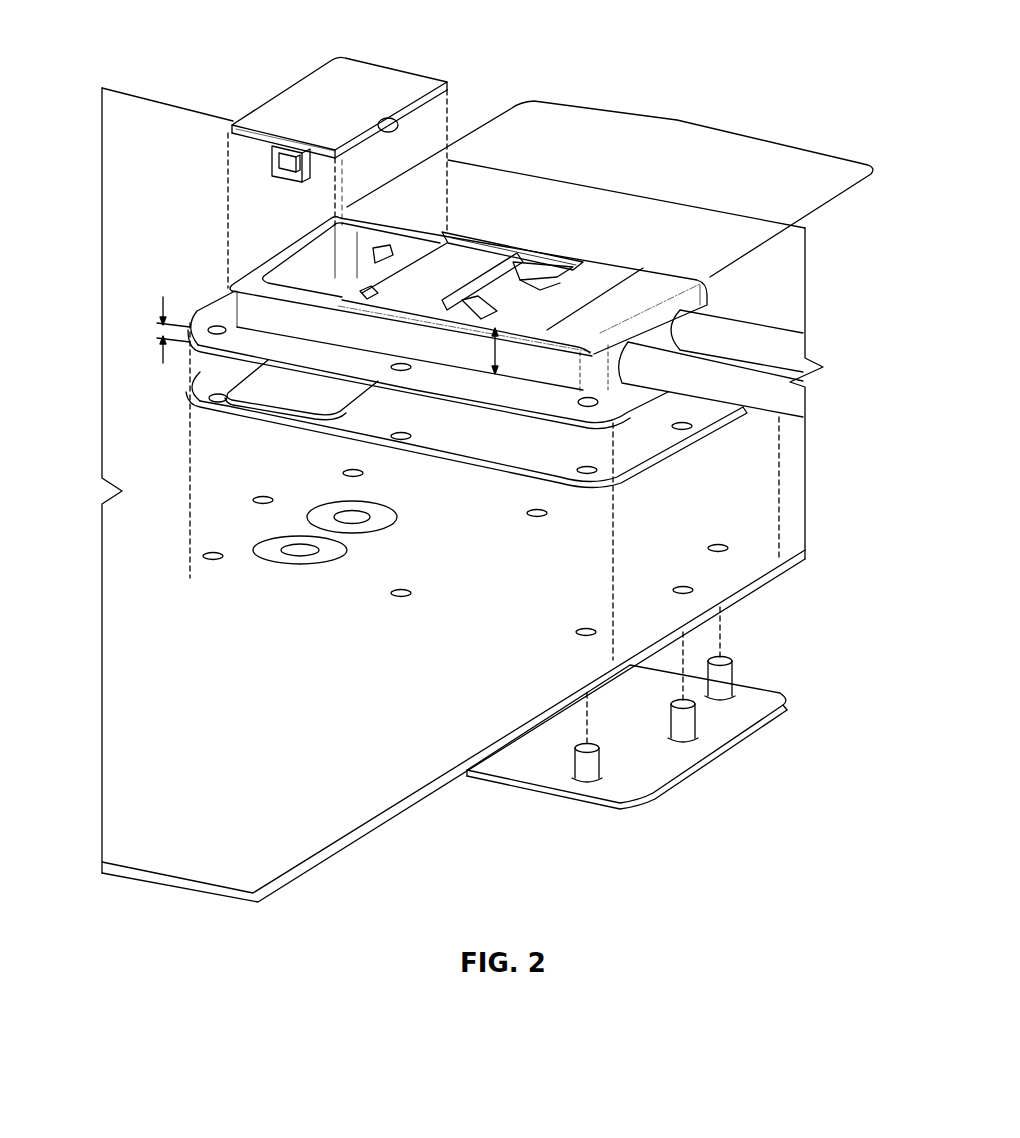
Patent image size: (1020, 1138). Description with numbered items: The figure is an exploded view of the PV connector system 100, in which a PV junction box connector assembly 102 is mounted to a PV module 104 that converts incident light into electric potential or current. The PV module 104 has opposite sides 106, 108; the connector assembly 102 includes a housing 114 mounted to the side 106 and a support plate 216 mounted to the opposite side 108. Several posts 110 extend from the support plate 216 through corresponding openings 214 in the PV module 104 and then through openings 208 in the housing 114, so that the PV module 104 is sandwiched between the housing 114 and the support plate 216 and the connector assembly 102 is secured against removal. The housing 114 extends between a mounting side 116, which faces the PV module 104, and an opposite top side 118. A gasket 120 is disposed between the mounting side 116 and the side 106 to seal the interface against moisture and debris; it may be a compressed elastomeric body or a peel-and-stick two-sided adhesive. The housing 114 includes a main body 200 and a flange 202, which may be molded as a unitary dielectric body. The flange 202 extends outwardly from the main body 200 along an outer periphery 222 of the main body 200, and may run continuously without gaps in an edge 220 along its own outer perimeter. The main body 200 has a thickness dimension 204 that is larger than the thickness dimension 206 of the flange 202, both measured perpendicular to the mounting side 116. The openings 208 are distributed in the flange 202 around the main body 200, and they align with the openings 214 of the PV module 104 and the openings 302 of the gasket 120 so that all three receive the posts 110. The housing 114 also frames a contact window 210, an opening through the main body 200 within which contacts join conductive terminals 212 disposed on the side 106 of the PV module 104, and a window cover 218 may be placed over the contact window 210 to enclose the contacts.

The system 100 is at (760, 44).
The PV junction box connector assembly 102 is at (280, 258).
The PV module 104 is at (666, 198).
The side 106 is at (702, 237).
The opposite side 108 is at (358, 840).
The posts 110 is at (733, 672).
The housing 114 is at (465, 232).
The mounting side 116 is at (462, 456).
The top side 118 is at (453, 363).
The gasket 120 is at (660, 460).
The main body 200 is at (676, 121).
The flange 202 is at (257, 343).
The thickness dimension 204 is at (497, 348).
The thickness dimension 206 is at (163, 297).
The openings 208 is at (594, 400).
The contact window 210 is at (368, 258).
The conductive terminals 212 is at (300, 548).
The openings 214 is at (214, 562).
The support plate 216 is at (680, 777).
The window cover 218 is at (413, 75).
The edge 220 is at (537, 408).
The outer periphery 222 is at (305, 345).
The openings 302 is at (220, 402).